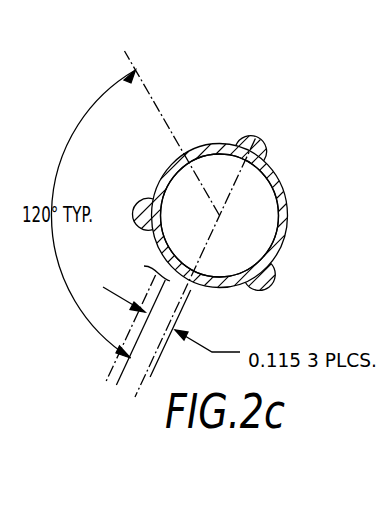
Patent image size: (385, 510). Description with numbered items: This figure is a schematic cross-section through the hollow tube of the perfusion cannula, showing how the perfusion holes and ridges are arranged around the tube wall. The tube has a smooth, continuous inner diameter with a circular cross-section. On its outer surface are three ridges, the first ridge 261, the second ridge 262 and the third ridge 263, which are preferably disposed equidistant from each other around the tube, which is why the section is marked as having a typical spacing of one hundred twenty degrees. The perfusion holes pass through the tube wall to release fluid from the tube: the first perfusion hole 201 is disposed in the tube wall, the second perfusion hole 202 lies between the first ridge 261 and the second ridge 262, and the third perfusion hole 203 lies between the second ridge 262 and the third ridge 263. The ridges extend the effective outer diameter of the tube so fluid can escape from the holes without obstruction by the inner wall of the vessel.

The first perfusion hole 201 is at (194, 153).
The second perfusion hole 202 is at (288, 219).
The third perfusion hole 203 is at (150, 320).
The first ridge 261 is at (143, 203).
The second ridge 262 is at (268, 143).
The third ridge 263 is at (270, 291).